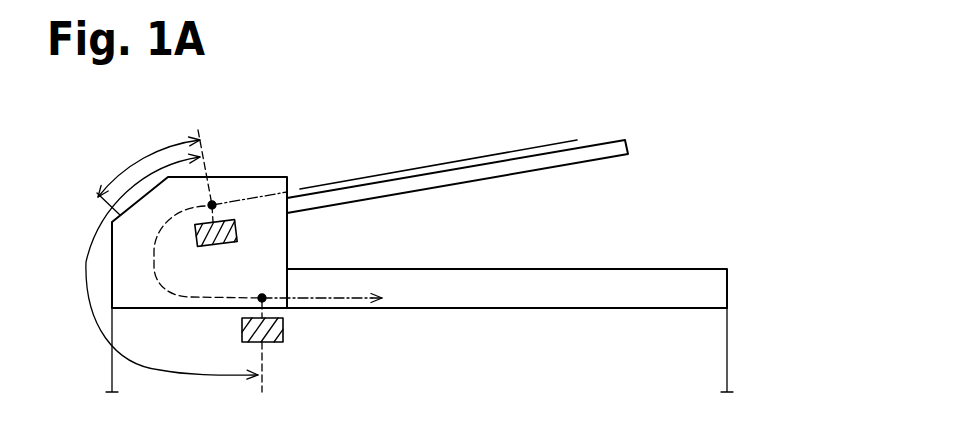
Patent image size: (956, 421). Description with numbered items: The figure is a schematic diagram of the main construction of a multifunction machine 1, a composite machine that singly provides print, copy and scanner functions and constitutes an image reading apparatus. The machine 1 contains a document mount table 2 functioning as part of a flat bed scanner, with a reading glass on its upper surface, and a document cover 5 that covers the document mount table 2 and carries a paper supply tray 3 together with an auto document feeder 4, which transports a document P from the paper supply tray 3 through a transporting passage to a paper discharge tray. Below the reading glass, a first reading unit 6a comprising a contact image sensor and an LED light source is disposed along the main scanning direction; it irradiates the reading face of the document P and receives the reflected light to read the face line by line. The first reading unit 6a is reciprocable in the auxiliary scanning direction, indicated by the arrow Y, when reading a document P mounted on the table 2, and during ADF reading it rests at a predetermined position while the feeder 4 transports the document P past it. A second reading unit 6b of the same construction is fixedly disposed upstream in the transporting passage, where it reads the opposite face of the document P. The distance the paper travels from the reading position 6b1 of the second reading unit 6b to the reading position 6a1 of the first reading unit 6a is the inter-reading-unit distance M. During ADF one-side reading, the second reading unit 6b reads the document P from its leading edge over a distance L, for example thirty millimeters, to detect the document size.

The multifunction machine 1 is at (464, 238).
The document mount table 2 is at (722, 345).
The paper supply tray 3 is at (629, 148).
The auto document feeder 4 is at (258, 155).
The document cover 5 is at (722, 289).
The first reading unit 6a is at (283, 332).
The reading position 6a1 is at (262, 294).
The second reading unit 6b is at (213, 248).
The reading position 6b1 is at (216, 206).
The document P is at (547, 143).
The distance L is at (148, 176).
The inter-reading-unit distance M is at (163, 266).
The auxiliary scanning direction Y is at (383, 299).